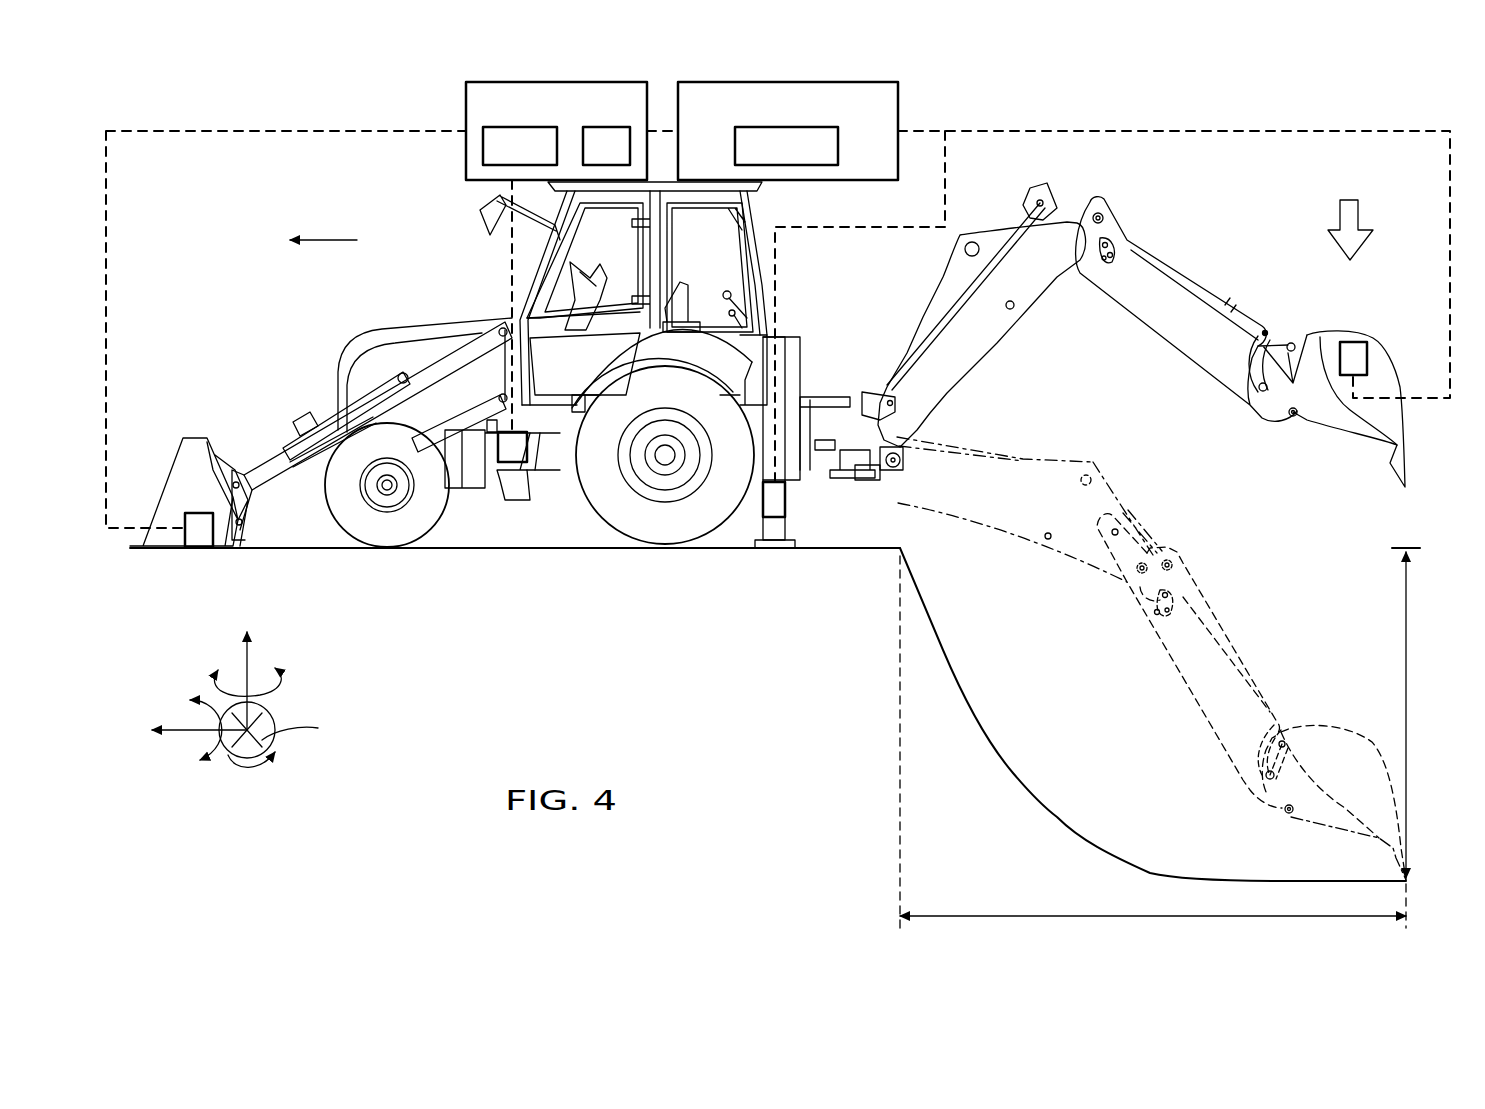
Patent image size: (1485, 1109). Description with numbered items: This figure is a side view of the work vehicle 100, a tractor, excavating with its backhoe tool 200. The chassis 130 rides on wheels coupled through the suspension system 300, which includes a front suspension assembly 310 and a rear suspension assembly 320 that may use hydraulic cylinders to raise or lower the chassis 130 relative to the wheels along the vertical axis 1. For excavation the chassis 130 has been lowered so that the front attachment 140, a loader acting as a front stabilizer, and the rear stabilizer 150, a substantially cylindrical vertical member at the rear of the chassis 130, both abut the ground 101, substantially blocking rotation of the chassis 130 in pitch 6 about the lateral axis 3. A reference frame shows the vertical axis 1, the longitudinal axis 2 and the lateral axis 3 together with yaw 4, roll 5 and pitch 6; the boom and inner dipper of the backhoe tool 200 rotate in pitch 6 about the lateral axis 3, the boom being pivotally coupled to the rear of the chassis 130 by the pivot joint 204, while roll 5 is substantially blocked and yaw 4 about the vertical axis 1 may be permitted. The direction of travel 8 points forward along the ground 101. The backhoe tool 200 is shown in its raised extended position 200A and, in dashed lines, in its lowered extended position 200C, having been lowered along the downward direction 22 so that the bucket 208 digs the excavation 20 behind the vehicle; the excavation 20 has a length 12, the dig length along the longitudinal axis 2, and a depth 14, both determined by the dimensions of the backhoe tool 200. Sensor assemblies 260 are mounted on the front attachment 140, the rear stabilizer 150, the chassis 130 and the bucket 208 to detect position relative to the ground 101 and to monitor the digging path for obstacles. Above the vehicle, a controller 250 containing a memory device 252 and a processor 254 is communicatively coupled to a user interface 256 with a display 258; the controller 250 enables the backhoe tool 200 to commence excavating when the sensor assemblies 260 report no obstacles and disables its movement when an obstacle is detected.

The work vehicle 100 is at (388, 188).
The direction of travel 8 is at (350, 226).
The controller 250 is at (557, 82).
The memory device 252 is at (483, 148).
The processor 254 is at (630, 128).
The user interface 256 is at (788, 82).
The display 258 is at (785, 165).
The ground 101 is at (522, 549).
The excavation 20 is at (1027, 830).
The length 12 is at (1150, 916).
The depth 14 is at (1406, 712).
The suspension system 300 is at (461, 364).
The front suspension assembly 310 is at (388, 413).
The rear suspension assembly 320 is at (663, 354).
The front attachment 140 is at (172, 492).
The chassis 130 is at (530, 478).
The rear stabilizer 150 is at (796, 546).
The pivot joint 204 is at (912, 462).
The backhoe tool 200 is at (880, 333).
The raised extended position 200A is at (1168, 243).
The bucket 208 is at (1388, 354).
The downward direction 22 is at (1358, 215).
The sensor assemblies 260 is at (213, 530).
The lowered extended position 200C is at (1153, 520).
The vertical axis 1 is at (243, 665).
The longitudinal axis 2 is at (175, 725).
The lateral axis 3 is at (298, 727).
The yaw 4 is at (282, 690).
The roll 5 is at (208, 700).
The pitch 6 is at (238, 762).